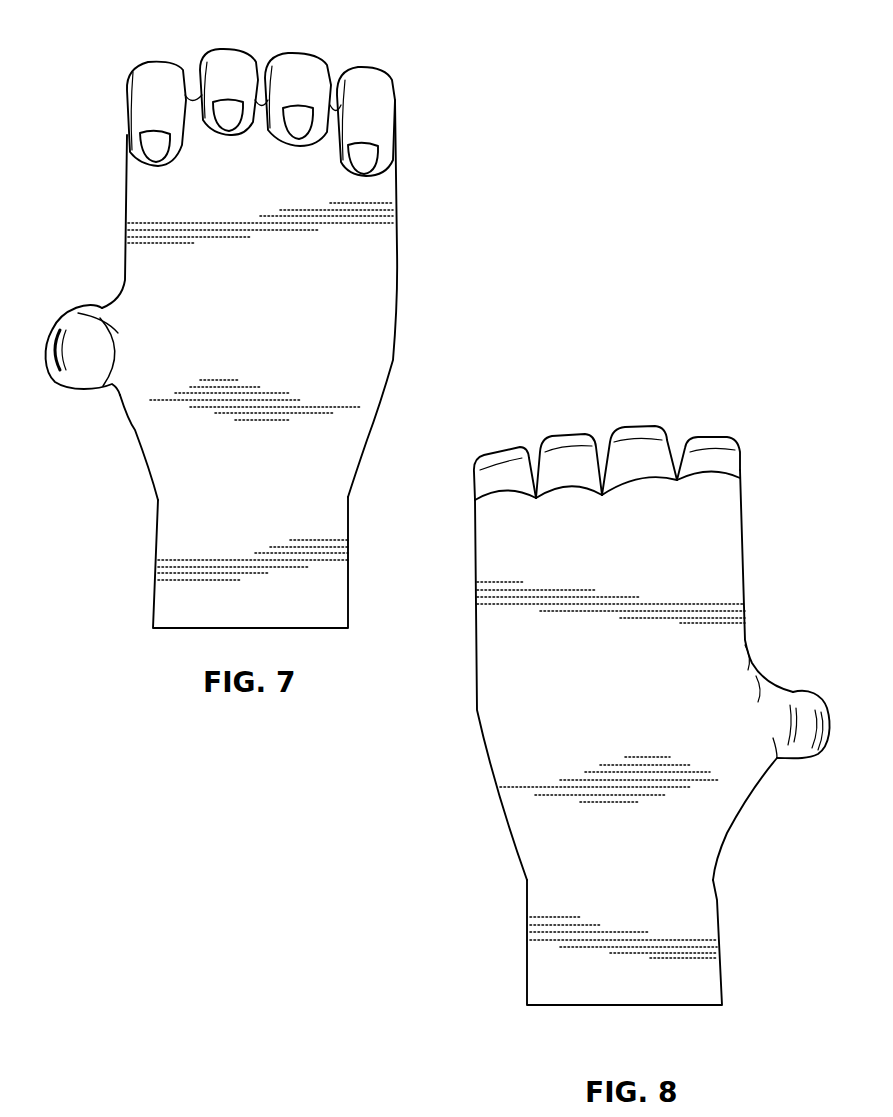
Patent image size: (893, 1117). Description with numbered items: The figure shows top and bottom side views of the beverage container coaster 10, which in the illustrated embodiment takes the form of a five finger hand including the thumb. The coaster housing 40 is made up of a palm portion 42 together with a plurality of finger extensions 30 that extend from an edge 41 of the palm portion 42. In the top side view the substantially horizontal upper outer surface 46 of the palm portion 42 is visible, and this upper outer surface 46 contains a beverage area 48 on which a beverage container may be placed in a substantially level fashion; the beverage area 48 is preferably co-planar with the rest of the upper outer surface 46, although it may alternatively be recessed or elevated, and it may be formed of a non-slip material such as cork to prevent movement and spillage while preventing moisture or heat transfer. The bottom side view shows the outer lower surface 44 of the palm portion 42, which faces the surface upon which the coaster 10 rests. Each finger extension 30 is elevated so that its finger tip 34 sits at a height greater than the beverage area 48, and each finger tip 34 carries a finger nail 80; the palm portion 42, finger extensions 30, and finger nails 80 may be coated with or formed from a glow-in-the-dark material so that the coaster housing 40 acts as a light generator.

In FIG. 7, the beverage container coaster 10 is at (92, 122).
In FIG. 8, the beverage container coaster 10 is at (430, 822).
In FIG. 7, the finger extension 30 is at (370, 79).
In FIG. 8, the finger extension 30 is at (497, 452).
In FIG. 7, the finger tip 34 is at (380, 123).
In FIG. 7, the coaster housing 40 is at (143, 207).
In FIG. 8, the coaster housing 40 is at (725, 588).
In FIG. 7, the edge 41 is at (158, 498).
In FIG. 8, the edge 41 is at (677, 478).
In FIG. 7, the palm portion 42 is at (376, 372).
In FIG. 8, the palm portion 42 is at (500, 700).
In FIG. 8, the outer lower surface 44 is at (610, 722).
In FIG. 7, the upper outer surface 46 is at (229, 206).
In FIG. 7, the beverage area 48 is at (255, 355).
In FIG. 7, the finger nail 80 is at (366, 165).